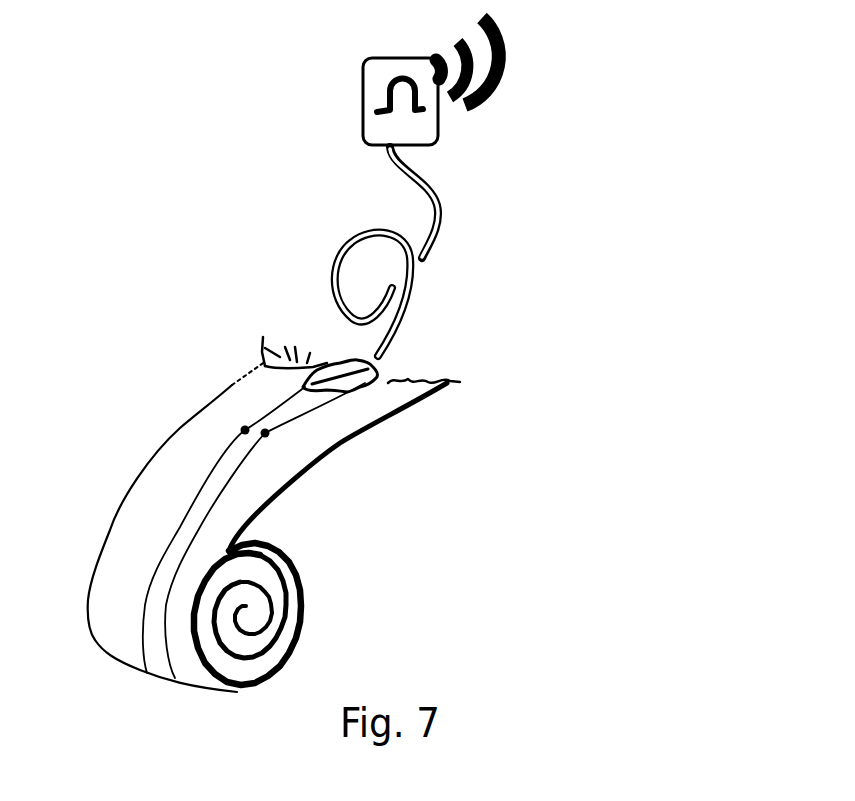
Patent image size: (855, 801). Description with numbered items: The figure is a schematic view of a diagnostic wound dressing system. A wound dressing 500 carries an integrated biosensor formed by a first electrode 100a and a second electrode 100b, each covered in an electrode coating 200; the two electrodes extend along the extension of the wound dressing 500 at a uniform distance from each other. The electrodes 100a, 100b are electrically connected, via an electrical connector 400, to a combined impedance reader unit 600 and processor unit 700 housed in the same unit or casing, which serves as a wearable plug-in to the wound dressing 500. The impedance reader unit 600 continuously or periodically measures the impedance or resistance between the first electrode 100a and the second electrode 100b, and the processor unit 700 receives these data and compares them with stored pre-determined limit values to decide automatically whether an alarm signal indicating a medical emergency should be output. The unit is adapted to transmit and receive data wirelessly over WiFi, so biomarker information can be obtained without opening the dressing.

The first electrode 100a is at (245, 430).
The second electrode 100b is at (265, 433).
The electrode coating 200 is at (393, 365).
The electrical connector 400 is at (347, 373).
The wound dressing 500 is at (147, 498).
The impedance reader unit 600 is at (378, 87).
The processor unit 700 is at (417, 187).